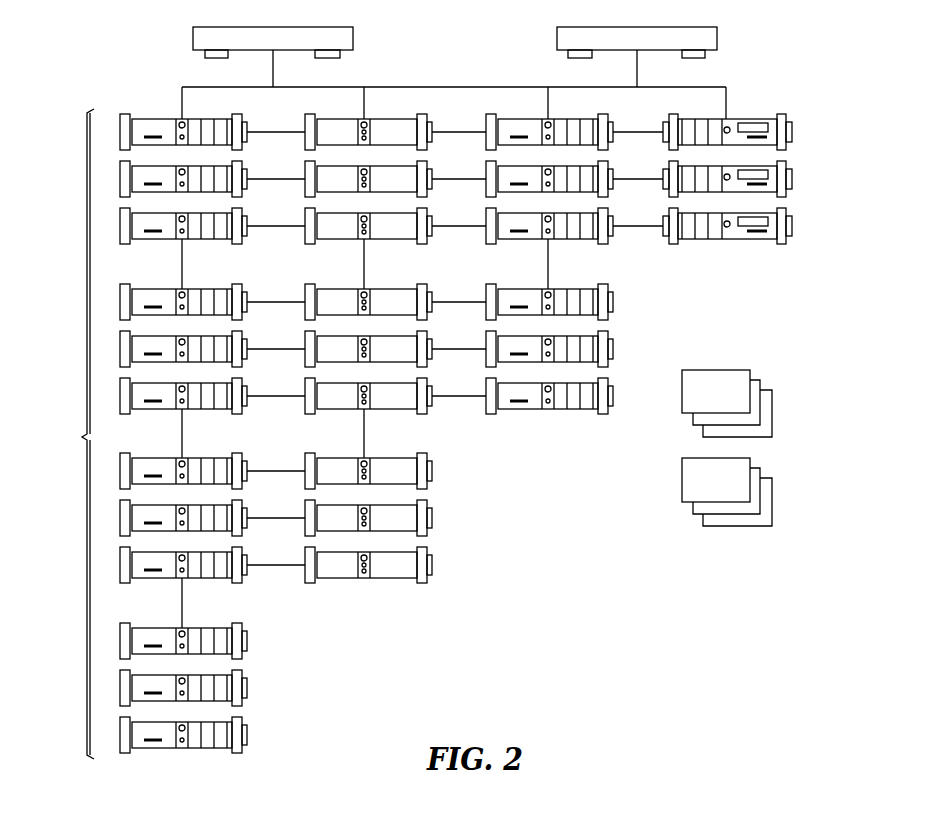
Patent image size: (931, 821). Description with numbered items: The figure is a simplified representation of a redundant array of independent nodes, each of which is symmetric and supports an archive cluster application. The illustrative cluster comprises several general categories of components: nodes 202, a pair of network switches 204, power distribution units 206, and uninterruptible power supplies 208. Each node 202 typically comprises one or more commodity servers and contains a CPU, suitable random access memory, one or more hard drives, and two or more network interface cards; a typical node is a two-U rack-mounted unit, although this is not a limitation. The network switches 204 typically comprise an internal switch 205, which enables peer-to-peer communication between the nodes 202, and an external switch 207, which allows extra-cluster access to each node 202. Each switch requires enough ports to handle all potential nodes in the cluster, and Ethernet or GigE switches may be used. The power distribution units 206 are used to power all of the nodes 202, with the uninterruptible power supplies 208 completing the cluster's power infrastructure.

The nodes 202 is at (412, 434).
The network switches 204 is at (777, 73).
The internal switch 205 is at (191, 40).
The power distribution units 206 is at (716, 368).
The external switch 207 is at (718, 40).
The uninterruptible power supplies 208 is at (739, 529).